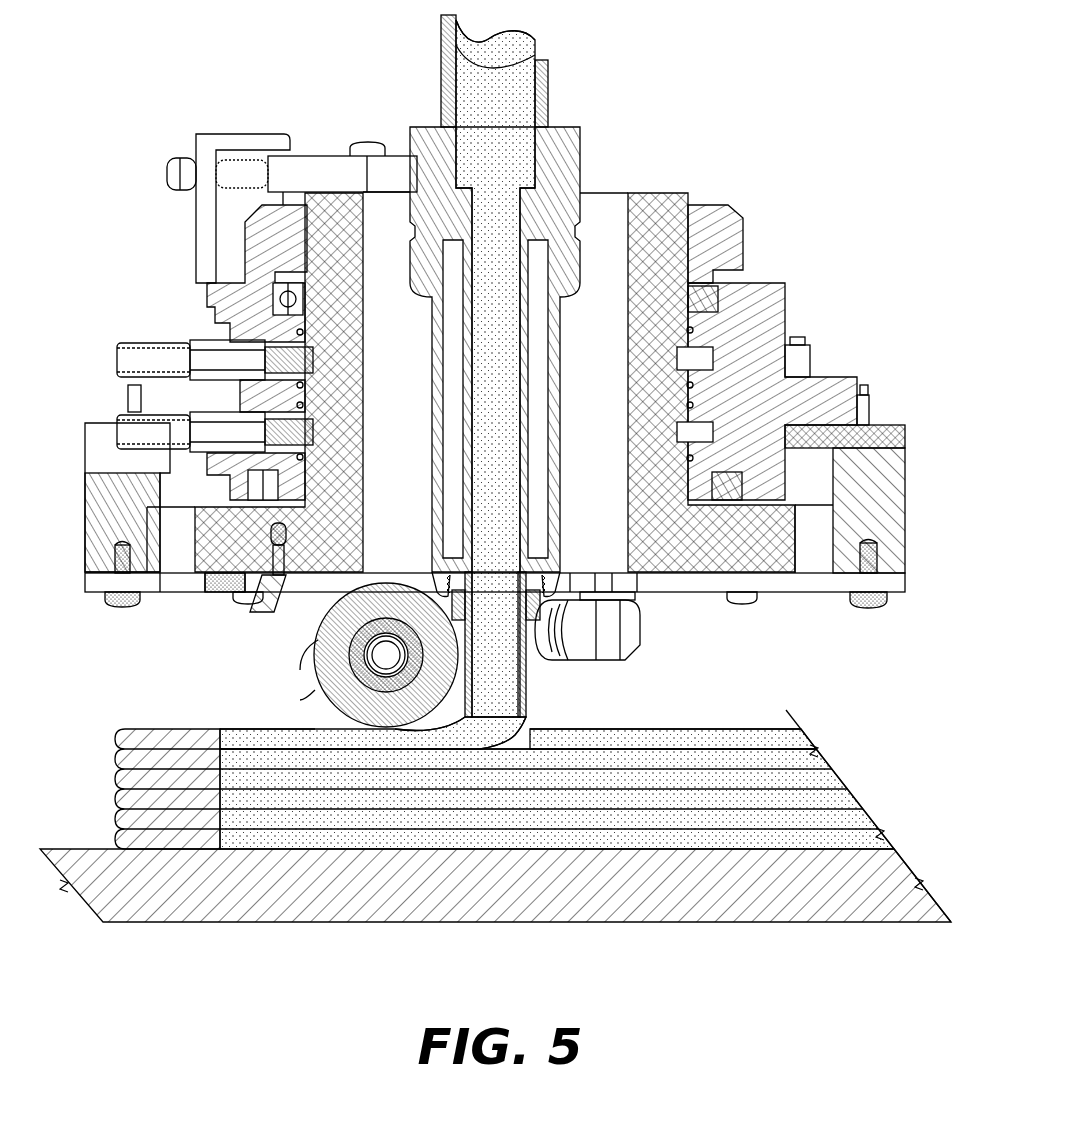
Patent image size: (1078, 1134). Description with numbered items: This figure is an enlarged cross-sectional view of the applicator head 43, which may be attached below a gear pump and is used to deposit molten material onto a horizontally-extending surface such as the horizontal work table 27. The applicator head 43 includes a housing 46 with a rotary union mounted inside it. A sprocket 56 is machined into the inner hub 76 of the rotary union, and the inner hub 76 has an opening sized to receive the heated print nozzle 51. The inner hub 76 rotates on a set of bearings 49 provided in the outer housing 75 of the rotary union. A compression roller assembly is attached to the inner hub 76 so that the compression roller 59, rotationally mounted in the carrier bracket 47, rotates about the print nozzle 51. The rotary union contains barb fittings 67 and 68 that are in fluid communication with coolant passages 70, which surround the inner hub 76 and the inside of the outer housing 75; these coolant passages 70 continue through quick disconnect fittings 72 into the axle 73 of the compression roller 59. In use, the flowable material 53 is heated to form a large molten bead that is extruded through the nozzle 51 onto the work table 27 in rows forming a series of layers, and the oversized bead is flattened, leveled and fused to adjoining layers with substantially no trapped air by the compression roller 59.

The horizontal work table 27 is at (645, 922).
The applicator head 43 is at (496, 382).
The housing 46 is at (905, 500).
The carrier bracket 47 is at (265, 608).
The bearings 49 is at (773, 352).
The nozzle 51 is at (425, 127).
The flowable material 53 is at (513, 43).
The sprocket 56 is at (797, 545).
The compression roller 59 is at (335, 655).
The barb fitting 67 is at (115, 437).
The barb fitting 68 is at (115, 360).
The coolant passages 70 is at (714, 358).
The quick disconnect fittings 72 is at (622, 667).
The axle 73 is at (348, 656).
The outer housing 75 is at (240, 280).
The inner hub 76 is at (648, 193).